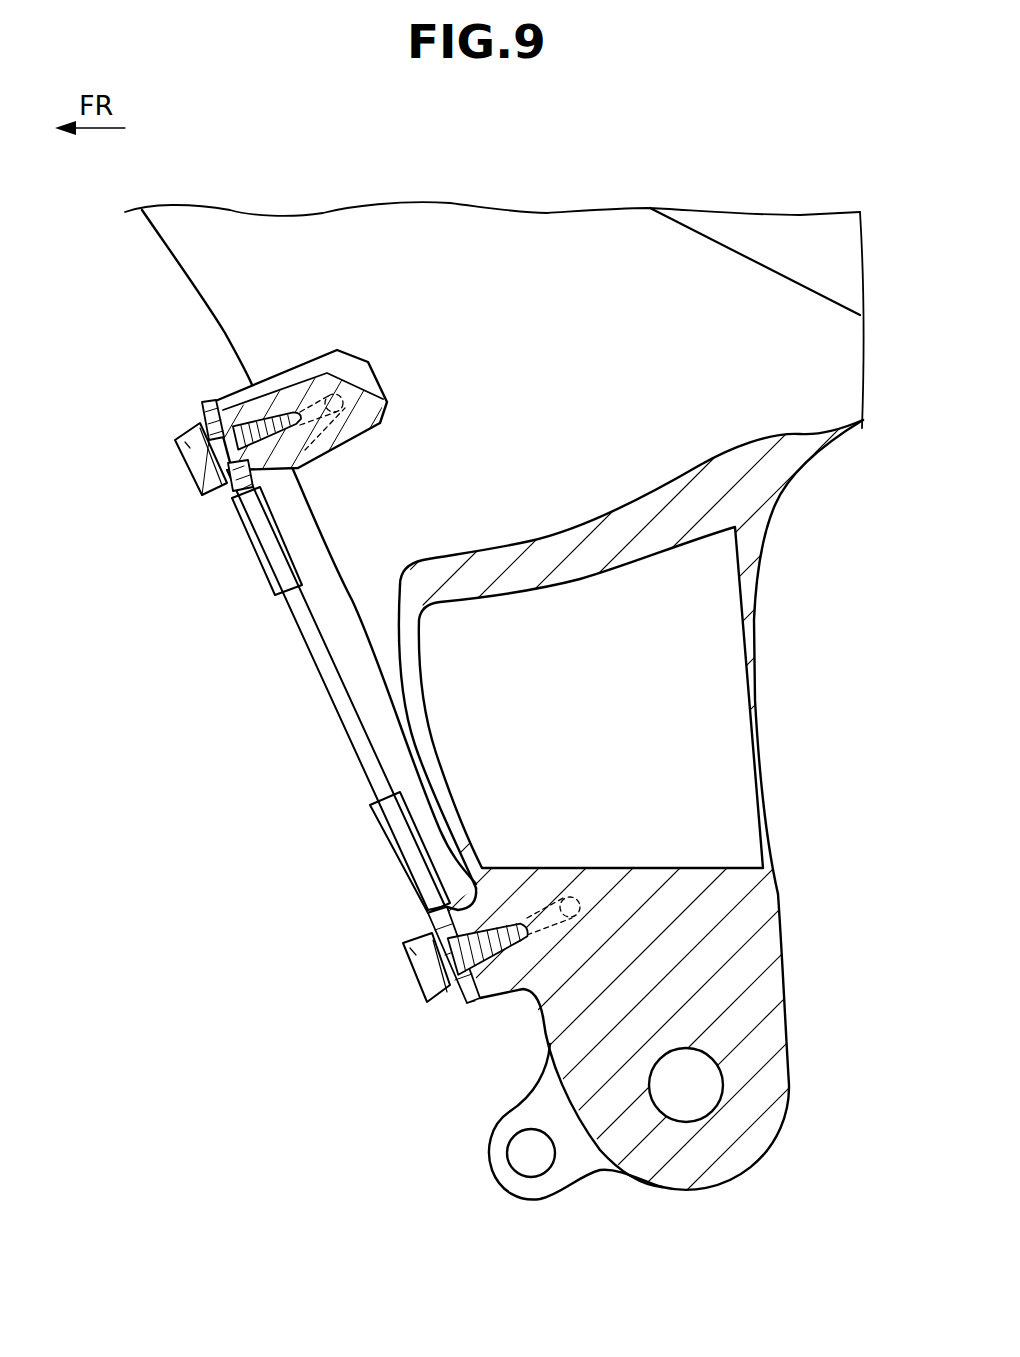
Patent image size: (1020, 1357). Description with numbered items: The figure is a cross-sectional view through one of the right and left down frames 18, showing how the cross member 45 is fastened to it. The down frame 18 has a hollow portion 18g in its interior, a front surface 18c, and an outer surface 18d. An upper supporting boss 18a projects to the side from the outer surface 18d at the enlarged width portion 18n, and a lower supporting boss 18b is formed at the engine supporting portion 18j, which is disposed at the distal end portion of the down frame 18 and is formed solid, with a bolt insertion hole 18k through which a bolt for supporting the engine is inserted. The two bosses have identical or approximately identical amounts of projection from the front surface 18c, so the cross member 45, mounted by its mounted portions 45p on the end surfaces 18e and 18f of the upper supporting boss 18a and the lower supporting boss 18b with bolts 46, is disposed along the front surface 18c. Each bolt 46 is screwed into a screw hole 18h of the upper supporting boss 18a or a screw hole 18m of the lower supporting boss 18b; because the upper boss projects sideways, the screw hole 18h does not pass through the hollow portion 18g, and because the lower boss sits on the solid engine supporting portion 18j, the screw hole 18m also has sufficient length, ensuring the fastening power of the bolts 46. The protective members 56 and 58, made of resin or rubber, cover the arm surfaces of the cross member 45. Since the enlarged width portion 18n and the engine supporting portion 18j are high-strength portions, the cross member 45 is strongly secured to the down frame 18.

The down frame 18 is at (510, 781).
The upper supporting boss 18a is at (262, 405).
The lower supporting boss 18b is at (502, 983).
The front surface 18c is at (383, 670).
The outer surface 18d is at (275, 330).
The end surface 18e is at (205, 406).
The end surface 18f is at (428, 925).
The hollow portion 18g is at (628, 575).
The screw hole 18h is at (257, 512).
The engine supporting portion 18j is at (765, 1037).
The bolt insertion hole 18k is at (673, 1103).
The screw hole 18m is at (533, 945).
The enlarged width portion 18n is at (524, 398).
The cross member 45 is at (304, 661).
The mounted portion 45p is at (212, 490).
The bolt 46 is at (190, 465).
The protective member 56 is at (258, 578).
The protective member 58 is at (373, 857).